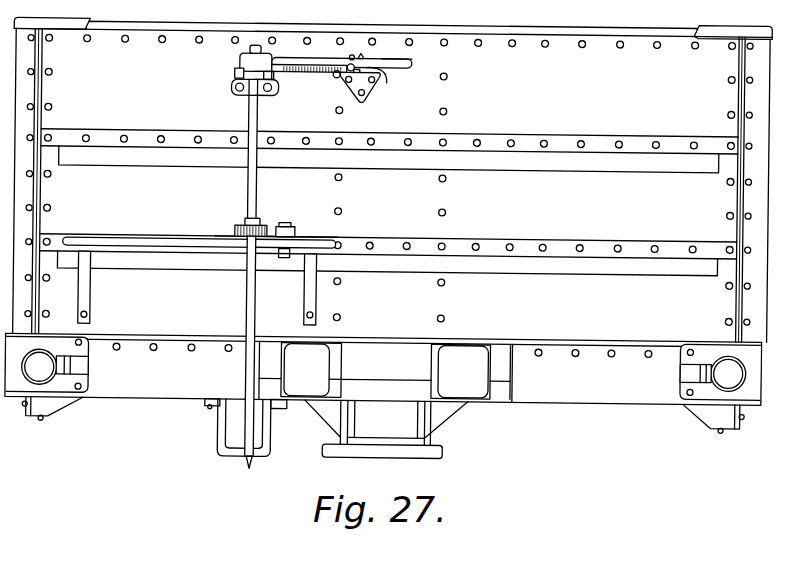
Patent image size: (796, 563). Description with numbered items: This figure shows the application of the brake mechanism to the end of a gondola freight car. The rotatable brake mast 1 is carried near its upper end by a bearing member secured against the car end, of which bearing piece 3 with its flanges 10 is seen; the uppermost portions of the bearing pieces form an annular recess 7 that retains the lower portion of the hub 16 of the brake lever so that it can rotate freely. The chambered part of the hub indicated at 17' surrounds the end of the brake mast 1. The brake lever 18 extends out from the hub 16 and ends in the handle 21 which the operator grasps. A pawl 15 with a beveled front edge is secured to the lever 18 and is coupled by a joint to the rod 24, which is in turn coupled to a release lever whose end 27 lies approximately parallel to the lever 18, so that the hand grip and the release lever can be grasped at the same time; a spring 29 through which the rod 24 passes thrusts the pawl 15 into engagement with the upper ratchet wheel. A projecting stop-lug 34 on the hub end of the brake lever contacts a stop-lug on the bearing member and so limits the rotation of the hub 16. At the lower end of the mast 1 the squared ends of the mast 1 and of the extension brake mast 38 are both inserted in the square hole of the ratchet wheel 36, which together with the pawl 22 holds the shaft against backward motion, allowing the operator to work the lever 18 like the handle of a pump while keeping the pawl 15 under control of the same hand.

The brake mast 1 is at (256, 206).
The bearing piece 3 is at (265, 95).
The annular recess 7 is at (235, 73).
The flanges 10 is at (237, 93).
The pawl 15 is at (268, 77).
The hub 16 is at (240, 64).
The chambered portion of hub 17' is at (276, 48).
The brake lever 18 is at (328, 64).
The handle 21 is at (409, 64).
The pawl 22 is at (295, 233).
The rod 24 is at (325, 74).
The lever end 27 is at (377, 78).
The spring 29 is at (293, 75).
The stop-lug 34 is at (248, 98).
The ratchet wheel 36 is at (242, 226).
The extension brake mast 38 is at (250, 306).